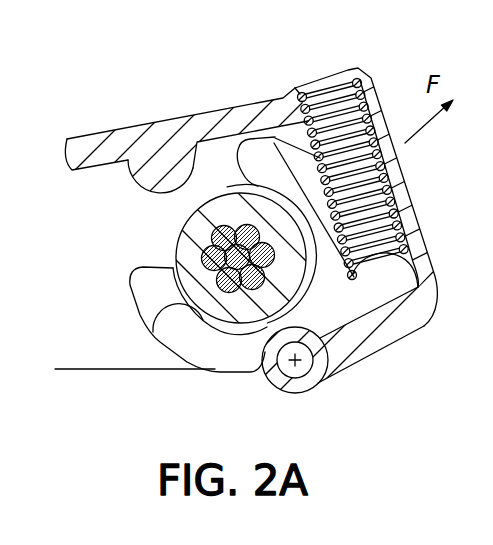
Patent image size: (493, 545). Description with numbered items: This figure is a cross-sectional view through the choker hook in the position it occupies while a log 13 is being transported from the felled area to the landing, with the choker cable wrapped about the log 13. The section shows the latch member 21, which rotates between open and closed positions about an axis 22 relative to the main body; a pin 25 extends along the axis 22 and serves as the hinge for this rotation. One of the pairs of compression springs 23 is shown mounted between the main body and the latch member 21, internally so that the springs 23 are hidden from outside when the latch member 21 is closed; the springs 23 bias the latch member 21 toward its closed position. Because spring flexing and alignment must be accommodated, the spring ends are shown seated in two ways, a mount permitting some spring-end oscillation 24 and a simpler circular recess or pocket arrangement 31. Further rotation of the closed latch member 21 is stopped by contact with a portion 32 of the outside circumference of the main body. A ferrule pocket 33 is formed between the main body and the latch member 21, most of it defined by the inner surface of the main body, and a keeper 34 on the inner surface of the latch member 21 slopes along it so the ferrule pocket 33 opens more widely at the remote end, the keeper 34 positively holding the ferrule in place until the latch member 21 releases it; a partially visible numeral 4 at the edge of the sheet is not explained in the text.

The handle lever 21 is at (151, 120).
The notch in handle 34 is at (165, 197).
The body / cable holder 32 is at (277, 137).
The coil spring 23 is at (333, 97).
The spring housing 31 is at (368, 78).
The arm 24 is at (387, 280).
The pivot boss 25 is at (323, 384).
The pivot pin 22 is at (292, 370).
The cam 33 is at (200, 325).
The support surface 13 is at (67, 366).
The clamp assembly (partially shown) 4 is at (487, 313).